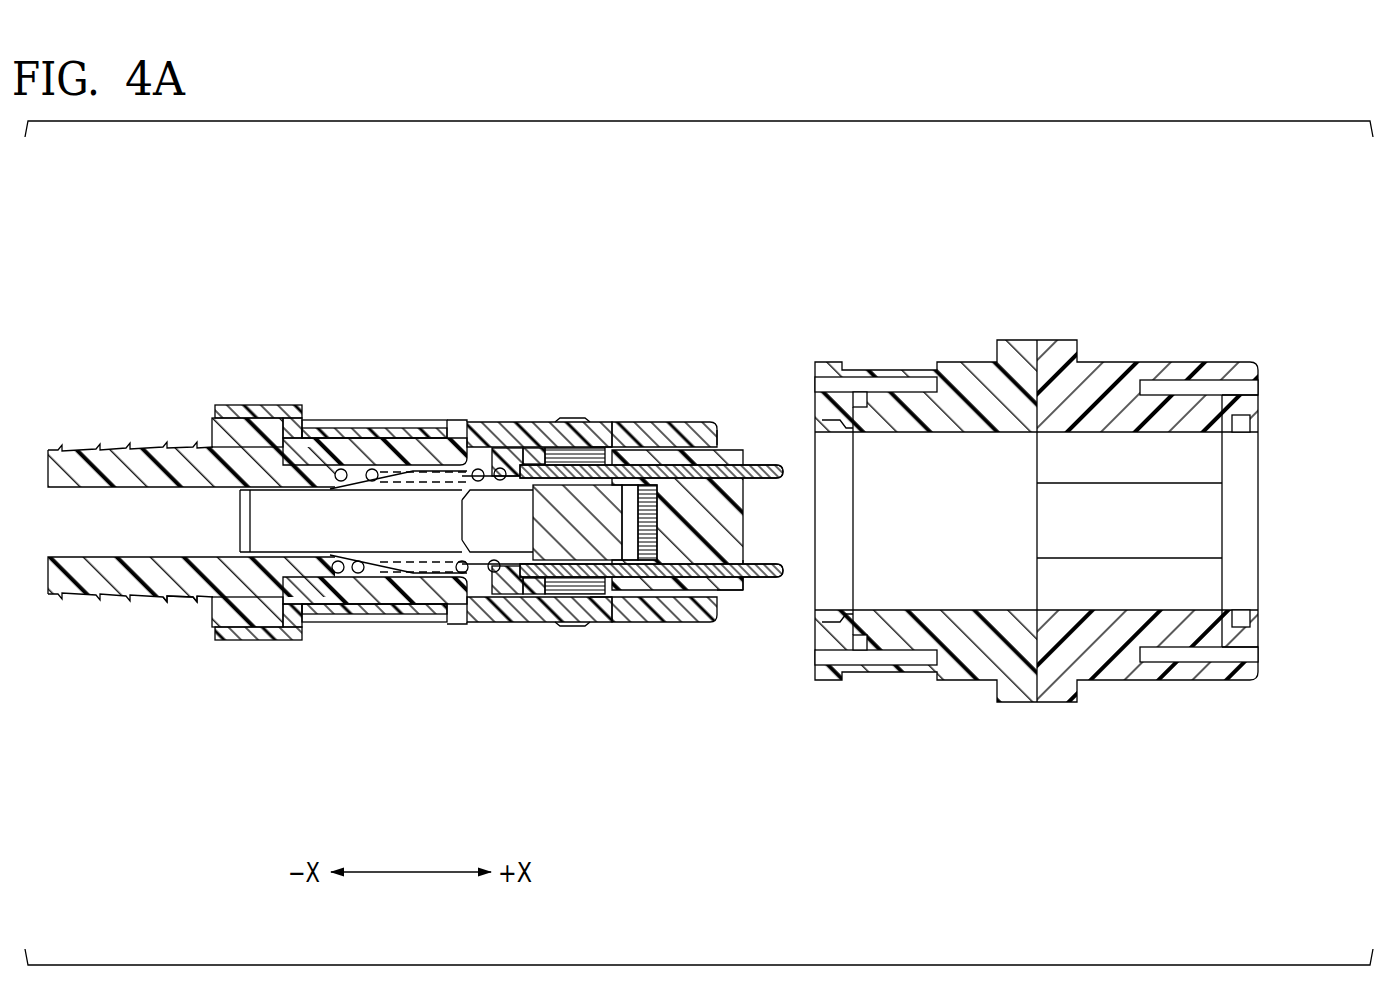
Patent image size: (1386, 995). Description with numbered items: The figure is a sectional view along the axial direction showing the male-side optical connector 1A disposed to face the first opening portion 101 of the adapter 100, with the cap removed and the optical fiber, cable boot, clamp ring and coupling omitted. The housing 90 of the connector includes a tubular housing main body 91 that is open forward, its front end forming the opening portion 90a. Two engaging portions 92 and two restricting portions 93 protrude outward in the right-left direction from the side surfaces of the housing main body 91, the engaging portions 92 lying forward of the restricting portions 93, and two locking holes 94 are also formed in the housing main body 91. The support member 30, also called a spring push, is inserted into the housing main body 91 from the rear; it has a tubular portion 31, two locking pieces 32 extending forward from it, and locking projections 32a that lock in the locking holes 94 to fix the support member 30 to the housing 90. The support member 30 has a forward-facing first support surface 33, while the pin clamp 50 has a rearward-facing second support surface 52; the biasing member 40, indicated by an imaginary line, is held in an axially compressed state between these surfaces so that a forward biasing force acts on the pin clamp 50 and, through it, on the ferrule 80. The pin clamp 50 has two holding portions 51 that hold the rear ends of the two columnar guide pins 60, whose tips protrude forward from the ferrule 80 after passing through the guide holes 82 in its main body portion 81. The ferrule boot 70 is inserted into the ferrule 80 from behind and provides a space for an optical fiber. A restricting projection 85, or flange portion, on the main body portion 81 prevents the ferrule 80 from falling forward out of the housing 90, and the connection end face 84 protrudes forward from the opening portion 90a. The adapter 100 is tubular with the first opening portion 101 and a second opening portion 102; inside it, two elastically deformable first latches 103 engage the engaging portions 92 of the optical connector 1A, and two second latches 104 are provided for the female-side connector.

The optical connector 1A is at (160, 352).
The support member 30 is at (118, 600).
The tubular portion 31 is at (197, 594).
The locking piece 32 is at (400, 430).
The locking projection 32a is at (455, 433).
The first support surface 33 is at (357, 562).
The biasing member 40 is at (350, 465).
The pin clamp 50 is at (517, 606).
The holding portion 51 is at (548, 586).
The second support surface 52 is at (505, 572).
The guide pin 60 is at (764, 584).
The ferrule boot 70 is at (605, 553).
The ferrule 80 is at (738, 449).
The main body portion 81 is at (733, 592).
The guide hole 82 is at (742, 472).
The connection end face 84 is at (743, 538).
The restricting projection 85 is at (605, 447).
The housing 90 is at (268, 402).
The opening portion 90a is at (727, 437).
The housing main body 91 is at (588, 440).
The engaging portion 92 is at (563, 425).
The restricting portion 93 is at (494, 420).
The locking hole 94 is at (466, 425).
The adapter 100 is at (965, 314).
The first opening portion 101 is at (815, 435).
The second opening portion 102 is at (1256, 436).
The first latch 103 is at (836, 427).
The second latch 104 is at (1236, 430).